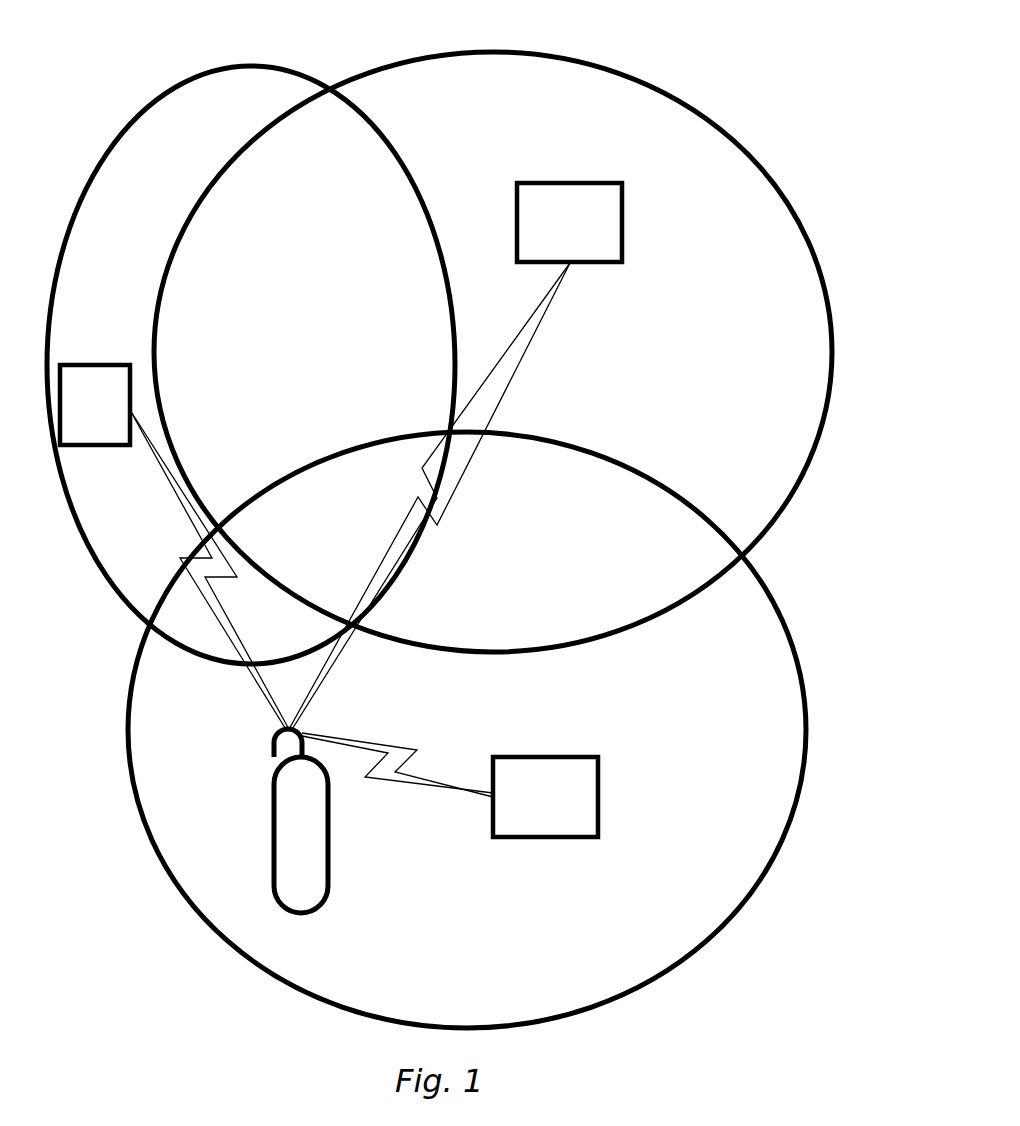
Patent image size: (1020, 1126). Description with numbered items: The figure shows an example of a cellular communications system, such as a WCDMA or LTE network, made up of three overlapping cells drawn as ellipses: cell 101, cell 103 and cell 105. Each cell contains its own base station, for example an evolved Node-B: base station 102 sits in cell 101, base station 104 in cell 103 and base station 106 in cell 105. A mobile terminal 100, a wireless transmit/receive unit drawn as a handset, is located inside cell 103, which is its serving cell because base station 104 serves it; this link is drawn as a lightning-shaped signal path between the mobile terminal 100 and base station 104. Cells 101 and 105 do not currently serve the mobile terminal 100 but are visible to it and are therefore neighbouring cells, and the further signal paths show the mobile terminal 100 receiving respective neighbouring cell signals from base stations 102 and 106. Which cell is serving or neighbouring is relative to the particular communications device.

The mobile terminal 100 is at (333, 847).
The cell 101 is at (493, 333).
The base station 102 is at (605, 210).
The cell 103 is at (467, 730).
The base station 104 is at (597, 766).
The cell 105 is at (251, 333).
The base station 106 is at (166, 367).